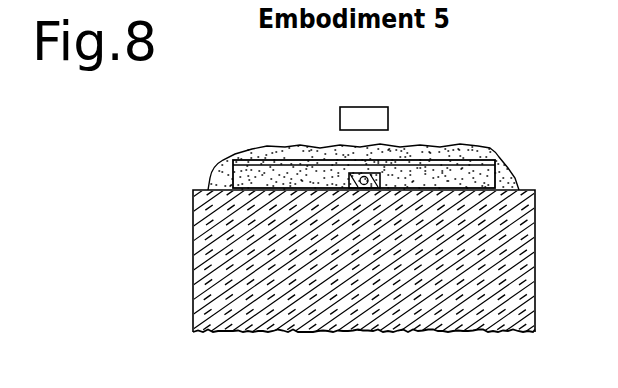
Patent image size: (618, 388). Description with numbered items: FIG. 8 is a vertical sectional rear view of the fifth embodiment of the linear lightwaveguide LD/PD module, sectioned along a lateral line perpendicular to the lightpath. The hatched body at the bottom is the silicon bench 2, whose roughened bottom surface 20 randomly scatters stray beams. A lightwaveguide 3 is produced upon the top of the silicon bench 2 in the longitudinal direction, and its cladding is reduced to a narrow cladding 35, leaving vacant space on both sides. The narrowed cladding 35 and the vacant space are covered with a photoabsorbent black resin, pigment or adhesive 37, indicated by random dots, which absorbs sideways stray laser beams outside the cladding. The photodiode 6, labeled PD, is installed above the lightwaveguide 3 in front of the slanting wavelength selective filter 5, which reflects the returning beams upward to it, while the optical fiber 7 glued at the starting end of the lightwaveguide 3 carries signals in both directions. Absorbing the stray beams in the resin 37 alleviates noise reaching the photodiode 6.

The silicon bench 2 is at (237, 270).
The bottom surface of substrate 20 is at (282, 333).
The photoabsorbent black resin 37 is at (493, 148).
The wavelength selective filter 5 is at (252, 163).
The optical fiber 7 is at (377, 145).
The lightwaveguide 3 is at (360, 178).
The narrow cladding 35 is at (350, 182).
The photodiode 6 is at (358, 107).